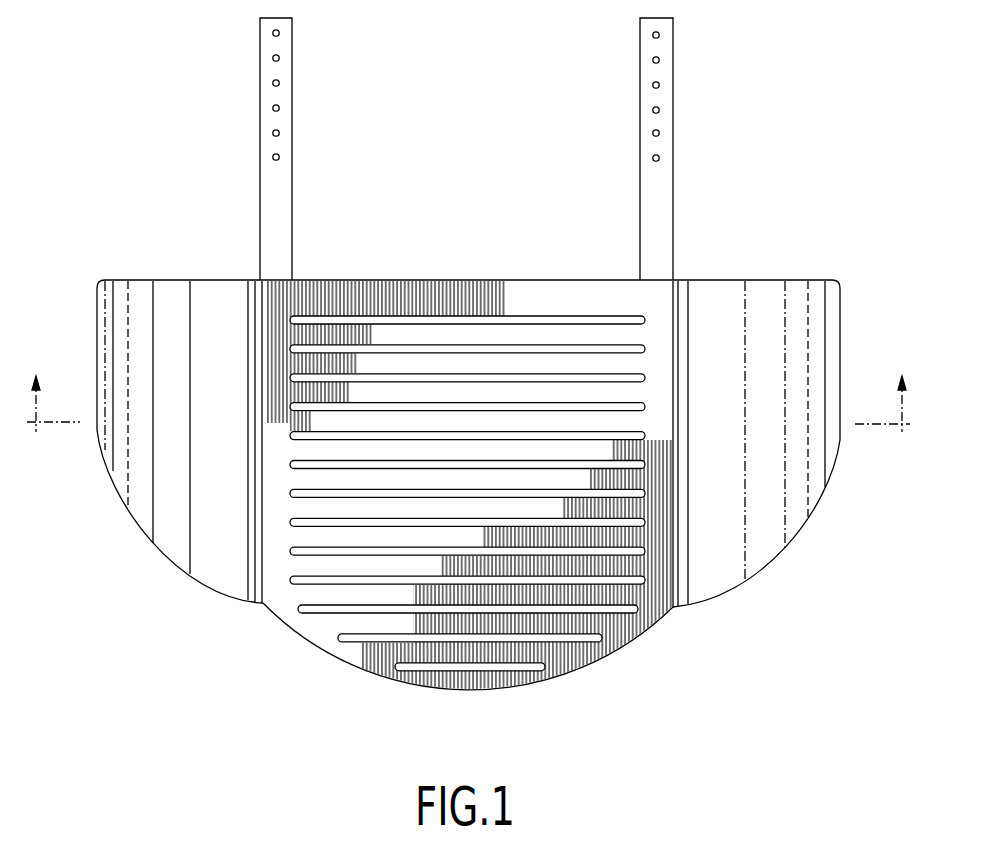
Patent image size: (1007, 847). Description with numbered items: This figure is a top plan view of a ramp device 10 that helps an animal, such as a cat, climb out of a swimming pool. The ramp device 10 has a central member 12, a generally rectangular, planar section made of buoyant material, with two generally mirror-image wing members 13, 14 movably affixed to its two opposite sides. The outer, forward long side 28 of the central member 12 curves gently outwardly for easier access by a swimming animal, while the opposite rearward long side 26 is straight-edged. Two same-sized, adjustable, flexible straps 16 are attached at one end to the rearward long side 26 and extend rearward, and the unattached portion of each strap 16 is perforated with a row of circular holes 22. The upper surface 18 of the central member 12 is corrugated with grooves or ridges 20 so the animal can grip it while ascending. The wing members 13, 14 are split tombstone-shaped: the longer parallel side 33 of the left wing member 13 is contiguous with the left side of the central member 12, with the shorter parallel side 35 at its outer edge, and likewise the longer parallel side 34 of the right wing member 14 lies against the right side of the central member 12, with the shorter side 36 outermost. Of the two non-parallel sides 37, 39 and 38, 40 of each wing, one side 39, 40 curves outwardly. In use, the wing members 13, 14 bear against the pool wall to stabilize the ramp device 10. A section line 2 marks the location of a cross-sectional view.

The ramp device 10 is at (806, 101).
The central member 12 is at (652, 647).
The left wing member 13 is at (126, 531).
The right wing member 14 is at (801, 561).
The flexible straps 16 is at (288, 45).
The upper surface 18 is at (380, 537).
The grooves or ridges 20 is at (347, 348).
The circular holes 22 is at (276, 109).
The rearward long side 26 is at (553, 280).
The forward long side 28 is at (593, 665).
The longer parallel side of left wing member 33 is at (250, 313).
The longer parallel side of right wing member 34 is at (683, 302).
The shorter parallel side of left wing member 35 is at (97, 322).
The shorter parallel side of right wing member 36 is at (840, 333).
The non-parallel side of left wing member 37 is at (168, 280).
The non-parallel side of right wing member 38 is at (768, 280).
The curved non-parallel side of left wing member 39 is at (175, 567).
The curved non-parallel side of right wing member 40 is at (742, 583).
The section line 2- 2 is at (468, 383).